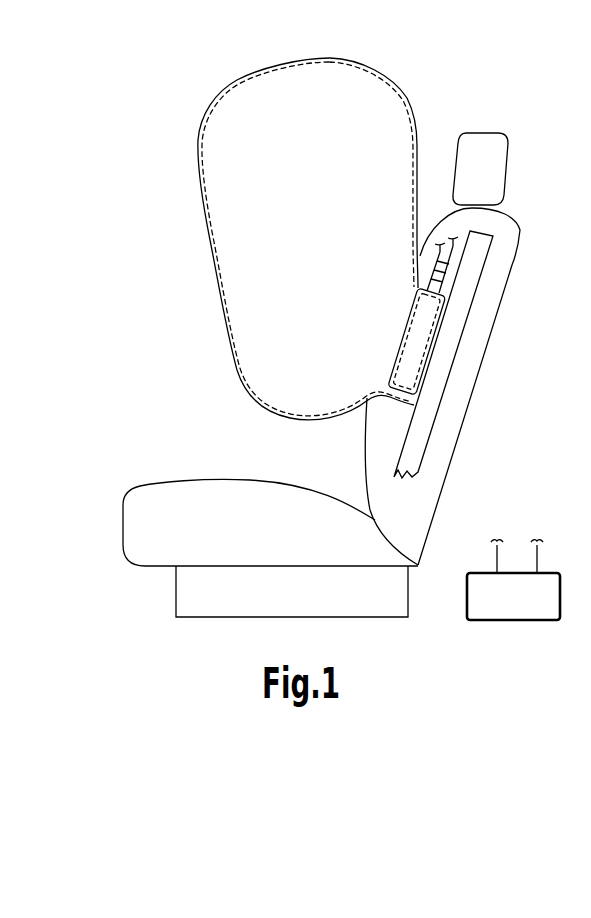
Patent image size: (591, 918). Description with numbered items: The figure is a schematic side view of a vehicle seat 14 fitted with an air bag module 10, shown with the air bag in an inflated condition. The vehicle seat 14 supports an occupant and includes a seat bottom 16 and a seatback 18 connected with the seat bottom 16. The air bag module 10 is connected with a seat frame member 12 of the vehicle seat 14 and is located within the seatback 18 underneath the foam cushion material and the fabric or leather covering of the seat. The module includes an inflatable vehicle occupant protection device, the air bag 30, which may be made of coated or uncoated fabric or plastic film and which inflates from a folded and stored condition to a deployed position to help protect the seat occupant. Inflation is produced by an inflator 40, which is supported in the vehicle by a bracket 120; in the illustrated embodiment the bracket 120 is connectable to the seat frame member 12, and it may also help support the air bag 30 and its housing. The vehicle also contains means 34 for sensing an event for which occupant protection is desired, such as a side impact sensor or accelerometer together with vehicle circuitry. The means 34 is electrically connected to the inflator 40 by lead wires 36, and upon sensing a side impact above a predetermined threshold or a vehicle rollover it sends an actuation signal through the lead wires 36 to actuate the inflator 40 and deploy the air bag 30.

The air bag module 10 is at (213, 355).
The seat frame member 12 is at (413, 438).
The vehicle seat 14 is at (232, 454).
The seat bottom 16 is at (155, 512).
The seatback 18 is at (385, 435).
The air bag 30 is at (212, 237).
The means for sensing an event 34 is at (508, 600).
The lead wires 36 is at (431, 262).
The inflator 40 is at (404, 348).
The bracket 120 is at (416, 289).